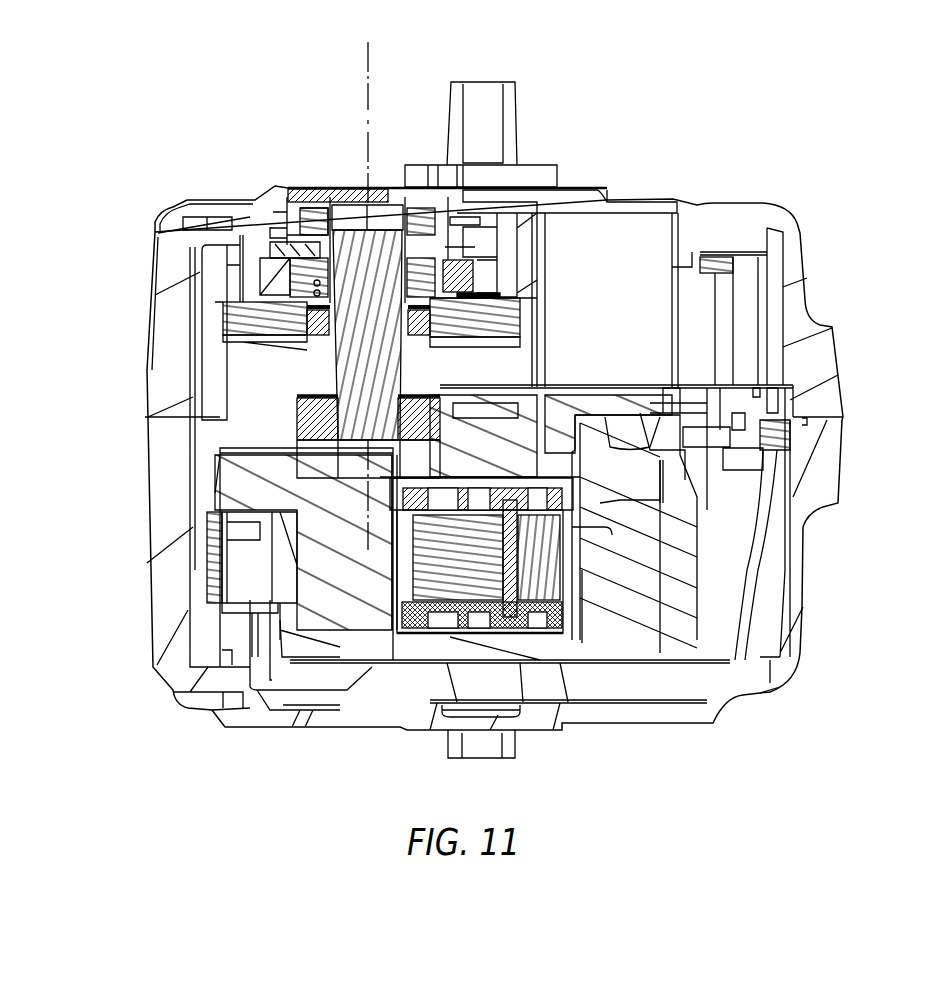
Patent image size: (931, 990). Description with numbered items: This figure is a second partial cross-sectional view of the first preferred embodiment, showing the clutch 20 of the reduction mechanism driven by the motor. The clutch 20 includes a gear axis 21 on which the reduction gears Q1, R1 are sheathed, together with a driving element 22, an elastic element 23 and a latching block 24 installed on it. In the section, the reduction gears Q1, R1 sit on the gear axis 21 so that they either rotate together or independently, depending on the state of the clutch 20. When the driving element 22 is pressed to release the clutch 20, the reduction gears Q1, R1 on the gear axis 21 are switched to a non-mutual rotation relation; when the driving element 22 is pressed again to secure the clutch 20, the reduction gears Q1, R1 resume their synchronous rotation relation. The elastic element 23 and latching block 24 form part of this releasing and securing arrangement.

The clutch 20 is at (254, 173).
The gear axis 21 is at (371, 77).
The driving element 22 is at (313, 200).
The elastic element 23 is at (310, 282).
The latching block 24 is at (295, 247).
The reduction gear Q1 is at (250, 320).
The reduction gear R1 is at (320, 371).